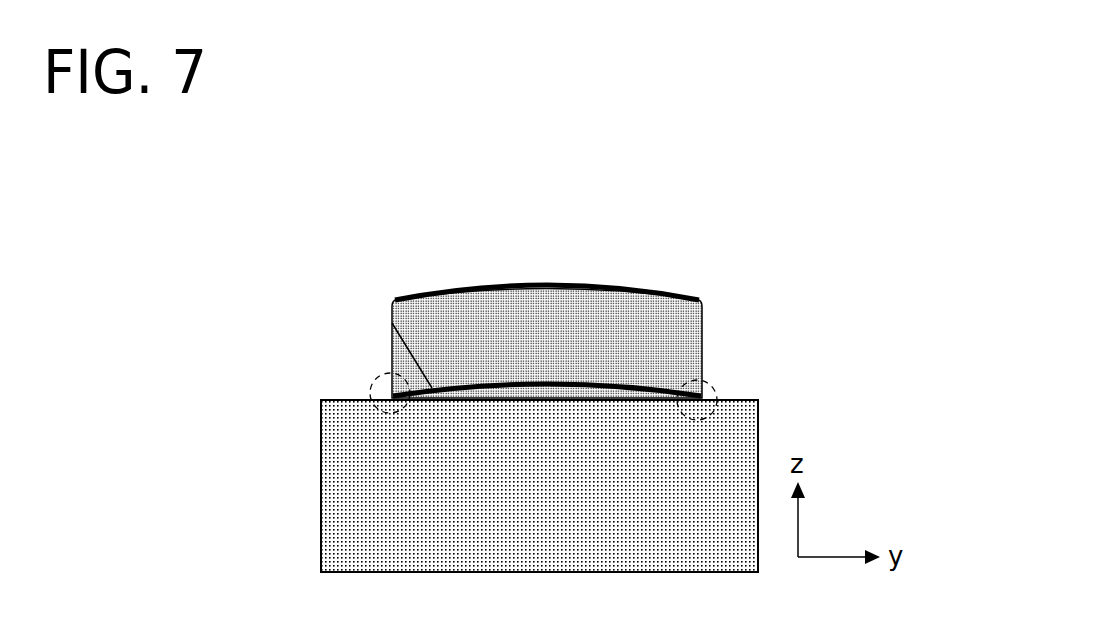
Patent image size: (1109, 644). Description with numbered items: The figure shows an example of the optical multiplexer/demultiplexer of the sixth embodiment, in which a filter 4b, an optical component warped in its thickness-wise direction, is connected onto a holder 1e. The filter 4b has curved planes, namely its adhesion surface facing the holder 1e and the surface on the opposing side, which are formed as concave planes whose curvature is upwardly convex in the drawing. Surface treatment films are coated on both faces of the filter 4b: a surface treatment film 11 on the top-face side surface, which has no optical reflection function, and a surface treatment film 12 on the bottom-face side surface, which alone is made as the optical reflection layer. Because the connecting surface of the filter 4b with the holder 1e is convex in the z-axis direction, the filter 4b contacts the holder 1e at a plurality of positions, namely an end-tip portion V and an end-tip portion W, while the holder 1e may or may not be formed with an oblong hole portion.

The holder 1e is at (500, 502).
The filter 4b is at (631, 185).
The surface treatment film 11 is at (544, 281).
The surface treatment film 12 is at (368, 297).
The end-tip portion V is at (349, 346).
The end-tip portion W is at (740, 343).